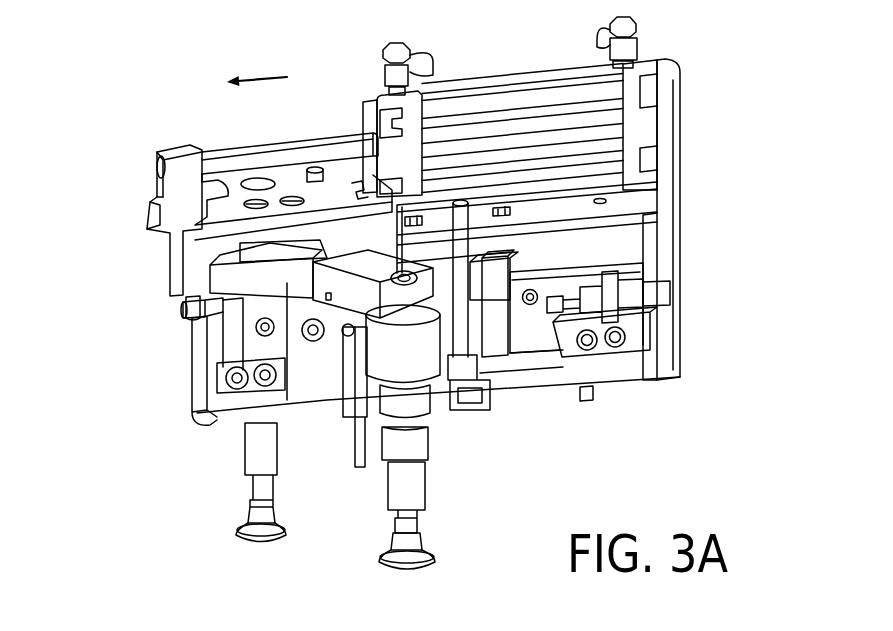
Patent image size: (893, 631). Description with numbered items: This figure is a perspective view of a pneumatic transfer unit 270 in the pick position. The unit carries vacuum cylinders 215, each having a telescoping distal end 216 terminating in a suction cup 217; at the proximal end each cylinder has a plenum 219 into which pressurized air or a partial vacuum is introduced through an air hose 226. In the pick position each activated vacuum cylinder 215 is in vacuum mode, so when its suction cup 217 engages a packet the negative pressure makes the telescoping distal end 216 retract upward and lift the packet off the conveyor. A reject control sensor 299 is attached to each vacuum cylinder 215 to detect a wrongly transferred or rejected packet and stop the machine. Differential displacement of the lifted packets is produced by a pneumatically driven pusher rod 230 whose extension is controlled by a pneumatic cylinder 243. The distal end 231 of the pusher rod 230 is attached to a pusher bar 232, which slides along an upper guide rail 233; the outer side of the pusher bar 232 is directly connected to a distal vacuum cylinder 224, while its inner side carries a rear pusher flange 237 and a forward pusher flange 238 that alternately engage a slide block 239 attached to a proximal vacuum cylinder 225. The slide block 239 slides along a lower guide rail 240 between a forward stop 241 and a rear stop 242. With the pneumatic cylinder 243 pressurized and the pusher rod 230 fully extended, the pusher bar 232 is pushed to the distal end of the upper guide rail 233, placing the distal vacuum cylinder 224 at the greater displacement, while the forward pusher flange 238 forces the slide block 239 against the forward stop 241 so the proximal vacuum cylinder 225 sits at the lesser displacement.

The pneumatic transfer unit 270 is at (167, 87).
The distal end of pusher rod 231 is at (147, 140).
The pusher bar 232 is at (192, 248).
The rear pusher flange 237 is at (182, 277).
The pusher rod 230 is at (277, 140).
The forward pusher flange 238 is at (363, 227).
The pneumatic cylinder 243 is at (540, 103).
The upper guide rail 233 is at (523, 207).
The lower guide rail 240 is at (550, 282).
The rear stop 242 is at (637, 335).
The slide block 239 is at (497, 333).
The air hose 226 is at (473, 340).
The plenum 219 is at (400, 363).
The reject control sensor 299 is at (362, 355).
The forward stop 241 is at (247, 385).
The distal vacuum cylinder 224 is at (228, 450).
The proximal vacuum cylinder 225 is at (380, 485).
The vacuum cylinder 215 is at (250, 468).
The telescoping distal end 216 is at (420, 527).
The suction cup 217 is at (390, 567).